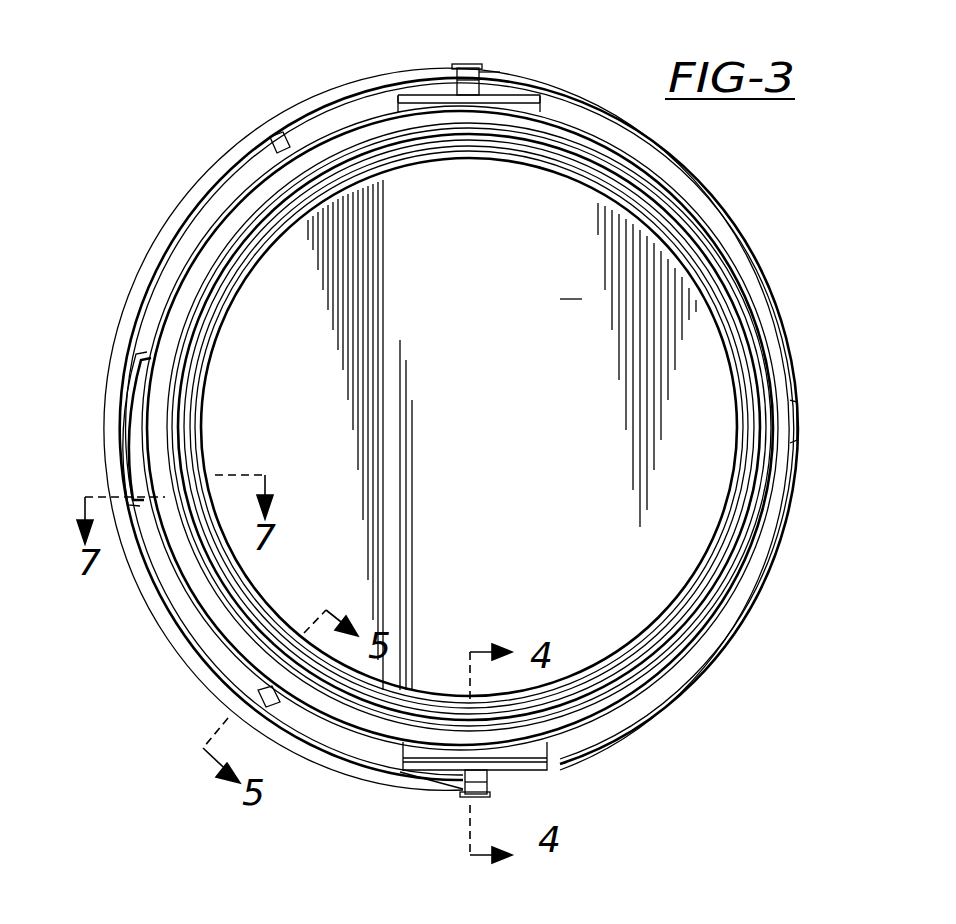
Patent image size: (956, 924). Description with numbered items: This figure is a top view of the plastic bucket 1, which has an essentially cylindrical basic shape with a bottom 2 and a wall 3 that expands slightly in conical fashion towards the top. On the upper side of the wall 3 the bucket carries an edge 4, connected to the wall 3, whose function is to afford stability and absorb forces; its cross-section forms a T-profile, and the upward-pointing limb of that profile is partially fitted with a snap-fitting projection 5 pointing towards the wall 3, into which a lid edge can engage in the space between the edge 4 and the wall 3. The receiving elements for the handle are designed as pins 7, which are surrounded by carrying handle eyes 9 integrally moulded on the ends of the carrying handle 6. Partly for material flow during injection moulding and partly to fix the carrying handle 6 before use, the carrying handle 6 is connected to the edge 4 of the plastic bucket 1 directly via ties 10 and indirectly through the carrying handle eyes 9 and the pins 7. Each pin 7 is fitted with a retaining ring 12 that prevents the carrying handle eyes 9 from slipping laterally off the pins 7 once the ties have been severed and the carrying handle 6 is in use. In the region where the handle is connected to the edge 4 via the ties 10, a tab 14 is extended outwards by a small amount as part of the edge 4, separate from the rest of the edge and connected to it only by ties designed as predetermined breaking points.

The plastic bucket 1 is at (808, 387).
The bottom 2 is at (469, 427).
The wall 3 is at (747, 330).
The edge 4 is at (797, 455).
The snap-fitting projection 5 is at (722, 216).
The carrying handle 6 is at (142, 291).
The pin 7 is at (482, 84).
The carrying handle eye 9 is at (480, 78).
The tie 10 is at (276, 142).
The retaining ring 12 is at (482, 67).
The tab 14 is at (130, 372).